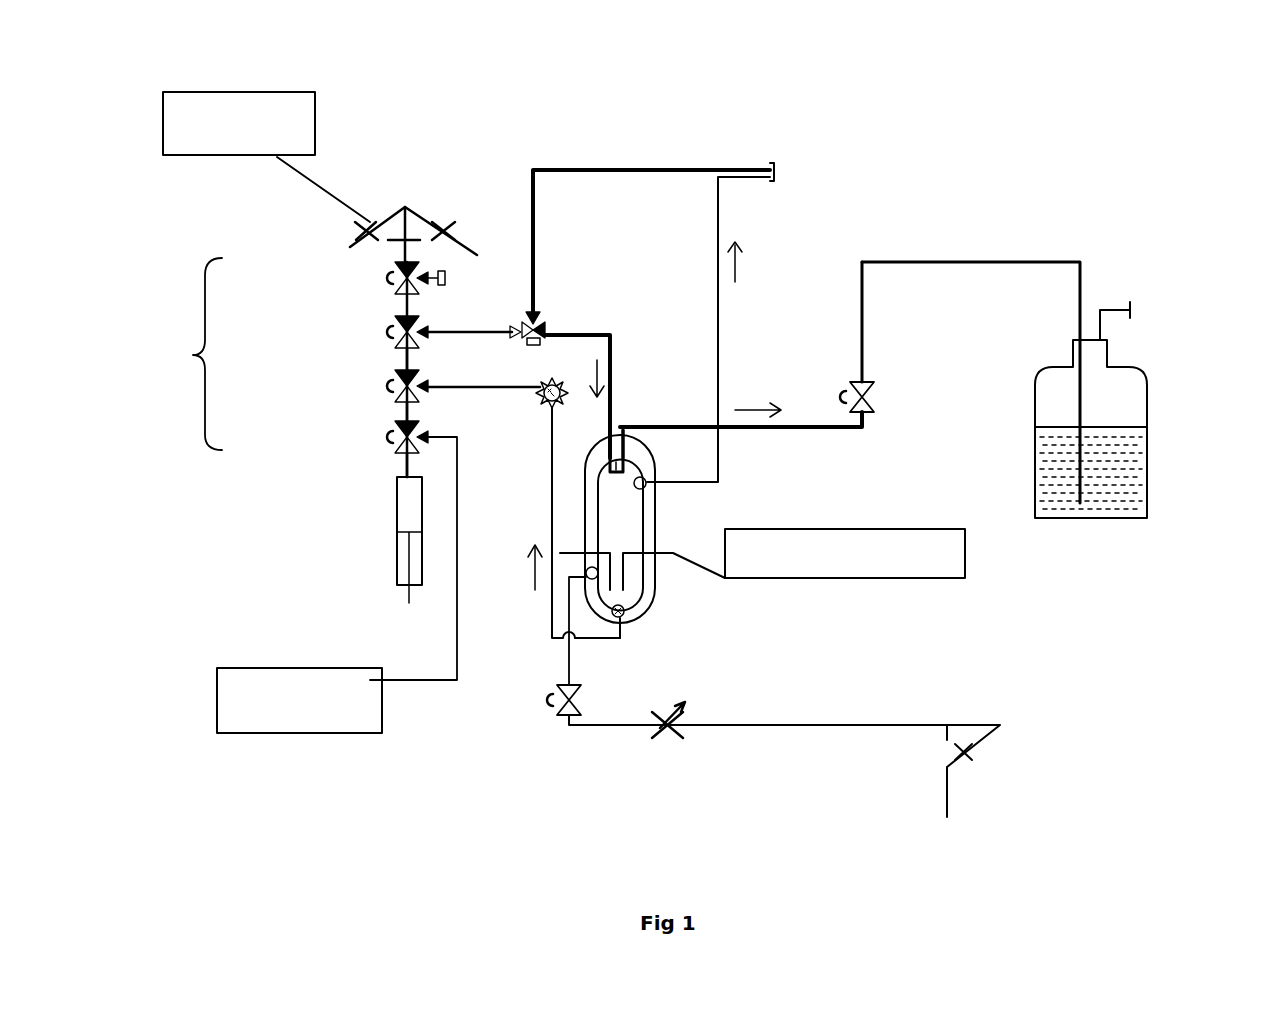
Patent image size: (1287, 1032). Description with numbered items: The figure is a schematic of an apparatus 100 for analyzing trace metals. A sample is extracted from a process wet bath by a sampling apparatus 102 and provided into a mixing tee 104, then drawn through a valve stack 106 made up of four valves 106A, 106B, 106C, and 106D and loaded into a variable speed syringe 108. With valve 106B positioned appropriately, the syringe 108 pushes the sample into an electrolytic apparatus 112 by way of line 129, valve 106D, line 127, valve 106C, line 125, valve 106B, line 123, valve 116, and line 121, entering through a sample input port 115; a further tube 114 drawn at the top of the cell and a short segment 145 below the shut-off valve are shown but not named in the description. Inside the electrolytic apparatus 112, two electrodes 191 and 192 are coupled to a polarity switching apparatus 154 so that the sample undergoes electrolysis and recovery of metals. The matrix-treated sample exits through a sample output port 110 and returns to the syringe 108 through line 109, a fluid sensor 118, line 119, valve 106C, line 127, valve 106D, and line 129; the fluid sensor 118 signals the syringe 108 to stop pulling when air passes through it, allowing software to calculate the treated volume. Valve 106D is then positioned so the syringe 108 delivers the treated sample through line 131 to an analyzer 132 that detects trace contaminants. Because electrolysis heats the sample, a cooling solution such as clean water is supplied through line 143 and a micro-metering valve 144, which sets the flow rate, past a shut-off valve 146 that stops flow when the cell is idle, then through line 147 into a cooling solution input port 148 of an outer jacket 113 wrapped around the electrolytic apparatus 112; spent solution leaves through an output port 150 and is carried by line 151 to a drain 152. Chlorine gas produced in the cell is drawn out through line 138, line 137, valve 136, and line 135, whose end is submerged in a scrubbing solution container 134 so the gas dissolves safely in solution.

The apparatus for analyzing trace metals 100 is at (1105, 180).
The sampling apparatus 102 is at (266, 80).
The mixing tee 104 is at (420, 208).
The valve stack 106 is at (268, 367).
The valve 106A is at (380, 278).
The valve 106B is at (380, 332).
The valve 106C is at (380, 389).
The valve 106D is at (380, 437).
The variable speed syringe 108 is at (380, 527).
The line 109 is at (613, 646).
The sample output port 110 is at (624, 618).
The electrolytic apparatus 112 is at (597, 487).
The outer jacket 113 is at (648, 531).
The outlet tube 114 is at (608, 462).
The sample input port 115 is at (622, 463).
The valve 116 is at (545, 318).
The fluid sensor 118 is at (538, 396).
The line 119 is at (512, 388).
The line 121 is at (615, 375).
The line 123 is at (472, 328).
The line 125 is at (400, 357).
The line 127 is at (400, 412).
The line 129 is at (400, 470).
The line 131 is at (455, 628).
The analyzer 132 is at (295, 733).
The scrubbing solution container 134 is at (1157, 440).
The line 135 is at (952, 257).
The valve 136 is at (873, 397).
The line 137 is at (775, 437).
The line 138 is at (625, 438).
The line 143 is at (852, 720).
The micro-metering valve 144 is at (660, 735).
The line from valve 146 145 is at (585, 735).
The shut-off valve 146 is at (582, 693).
The line 147 is at (565, 655).
The cooling solution input port 148 is at (585, 580).
The output port 150 is at (648, 488).
The line 151 is at (725, 296).
The drain 152 is at (758, 165).
The polarity switching apparatus 154 is at (845, 527).
The electrode 191 is at (608, 567).
The electrode 192 is at (627, 568).